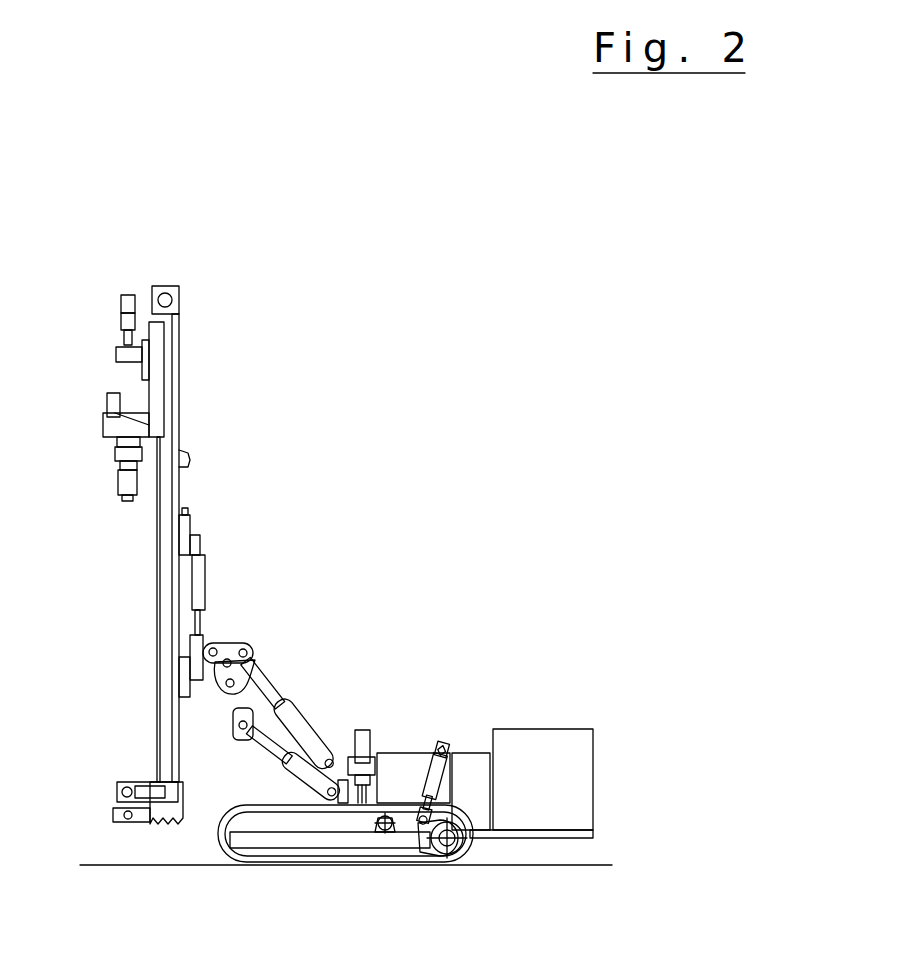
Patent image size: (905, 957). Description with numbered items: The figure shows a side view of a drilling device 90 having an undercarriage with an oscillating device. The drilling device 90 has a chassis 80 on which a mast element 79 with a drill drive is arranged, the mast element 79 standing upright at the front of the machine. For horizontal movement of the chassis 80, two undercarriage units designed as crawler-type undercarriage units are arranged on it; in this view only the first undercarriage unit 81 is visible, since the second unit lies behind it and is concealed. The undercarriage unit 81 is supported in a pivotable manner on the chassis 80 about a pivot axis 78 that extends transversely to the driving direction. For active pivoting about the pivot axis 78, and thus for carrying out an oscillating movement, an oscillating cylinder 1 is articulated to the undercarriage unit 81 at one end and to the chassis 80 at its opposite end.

The oscillating cylinder 1 is at (426, 778).
The pivot axis 78 is at (387, 827).
The mast element 79 is at (167, 582).
The chassis 80 is at (349, 697).
The undercarriage unit 81 is at (340, 857).
The drilling device 90 is at (465, 589).